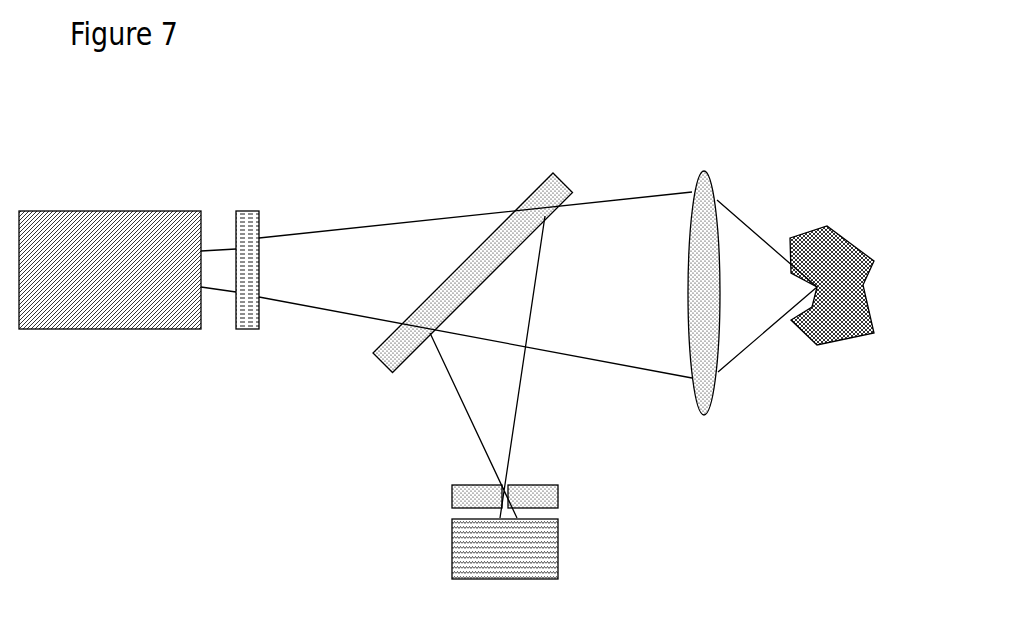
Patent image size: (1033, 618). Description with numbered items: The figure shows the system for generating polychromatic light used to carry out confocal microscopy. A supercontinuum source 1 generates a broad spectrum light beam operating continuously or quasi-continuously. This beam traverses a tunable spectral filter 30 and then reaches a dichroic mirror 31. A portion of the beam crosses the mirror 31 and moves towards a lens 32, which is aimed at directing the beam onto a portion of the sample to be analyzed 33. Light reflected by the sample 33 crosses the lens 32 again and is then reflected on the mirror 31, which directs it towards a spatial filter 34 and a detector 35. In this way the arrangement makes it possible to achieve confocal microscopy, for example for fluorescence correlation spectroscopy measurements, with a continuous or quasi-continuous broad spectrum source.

The supercontinuum source 1 is at (97, 227).
The tunable spectral filter 30 is at (247, 222).
The dichroic mirror 31 is at (560, 185).
The lens 32 is at (705, 175).
The sample to be analyzed 33 is at (838, 250).
The spatial filter 34 is at (545, 498).
The detector 35 is at (545, 560).